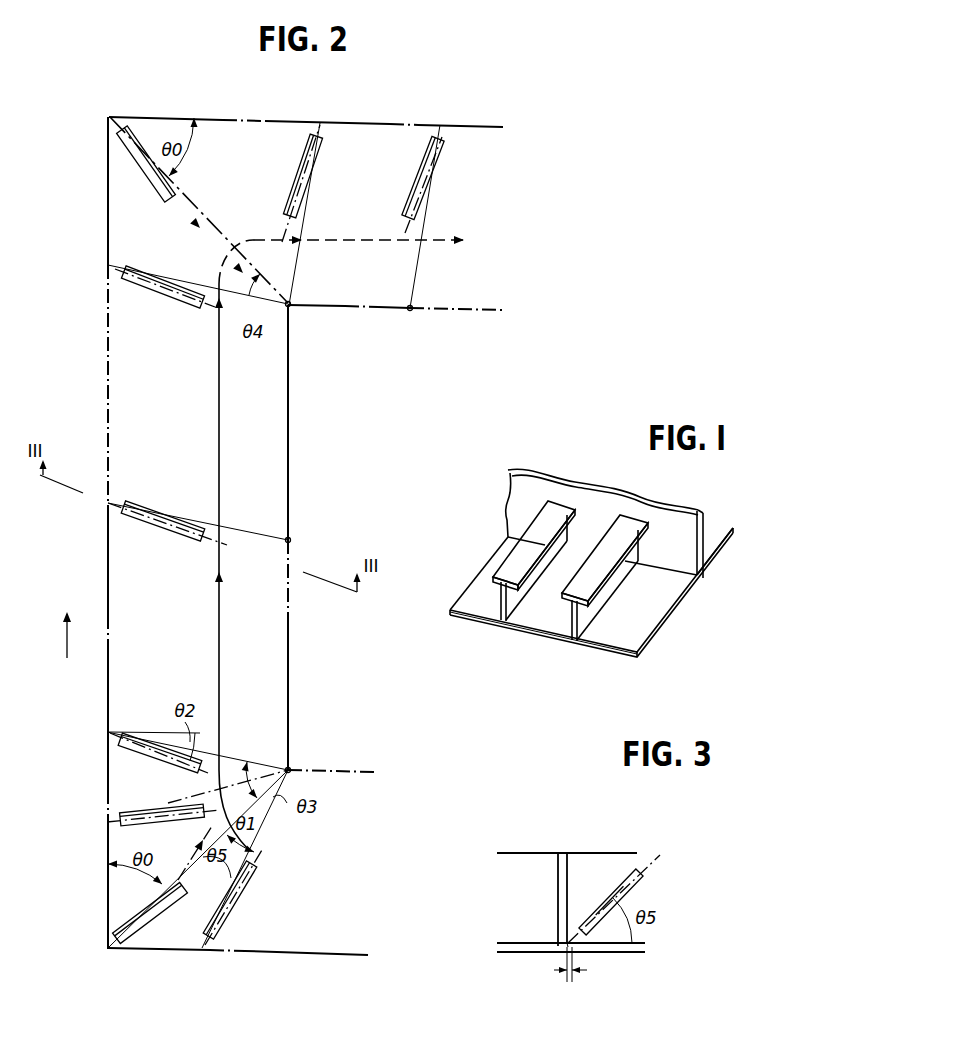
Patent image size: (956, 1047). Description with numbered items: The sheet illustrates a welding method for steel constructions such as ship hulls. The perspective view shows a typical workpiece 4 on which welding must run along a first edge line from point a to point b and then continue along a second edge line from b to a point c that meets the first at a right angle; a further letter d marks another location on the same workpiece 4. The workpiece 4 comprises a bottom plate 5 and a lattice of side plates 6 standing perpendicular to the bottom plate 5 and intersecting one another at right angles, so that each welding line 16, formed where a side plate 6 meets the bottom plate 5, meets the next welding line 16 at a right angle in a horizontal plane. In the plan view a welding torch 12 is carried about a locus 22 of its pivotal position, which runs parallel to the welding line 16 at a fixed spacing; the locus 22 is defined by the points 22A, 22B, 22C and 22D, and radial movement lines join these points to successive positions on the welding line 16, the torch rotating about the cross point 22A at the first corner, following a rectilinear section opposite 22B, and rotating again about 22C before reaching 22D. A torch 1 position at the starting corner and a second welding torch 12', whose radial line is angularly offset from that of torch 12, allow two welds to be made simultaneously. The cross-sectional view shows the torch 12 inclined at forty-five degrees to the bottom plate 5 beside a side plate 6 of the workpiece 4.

In FIG. 2, the welding line 16 is at (325, 975).
In FIG. 3, the welding line 16 is at (567, 947).
In FIG. 2, the plate at starting position 1 is at (140, 930).
In FIG. 2, the second welding torch 12' is at (233, 930).
In FIG. 3, the welding torch 12 is at (614, 874).
In FIG. 2, the locus of a pivotal position 22 is at (388, 309).
In FIG. 2, the cross point between adjacent loci 22A is at (315, 756).
In FIG. 2, the pivotal position point 22B is at (316, 540).
In FIG. 2, the pivotal position cross point 22C is at (315, 321).
In FIG. 2, the pivotal position point 22D is at (429, 324).
In FIG. 3, the workpiece 4 is at (537, 850).
In FIG. 3, the bottom plate 5 is at (618, 952).
In FIG. 3, the side plates 6 is at (558, 892).
In FIG. 1, the point a is at (575, 642).
In FIG. 1, the point b is at (641, 563).
In FIG. 1, the point c is at (698, 578).
In FIG. 1, the rail web d is at (599, 568).